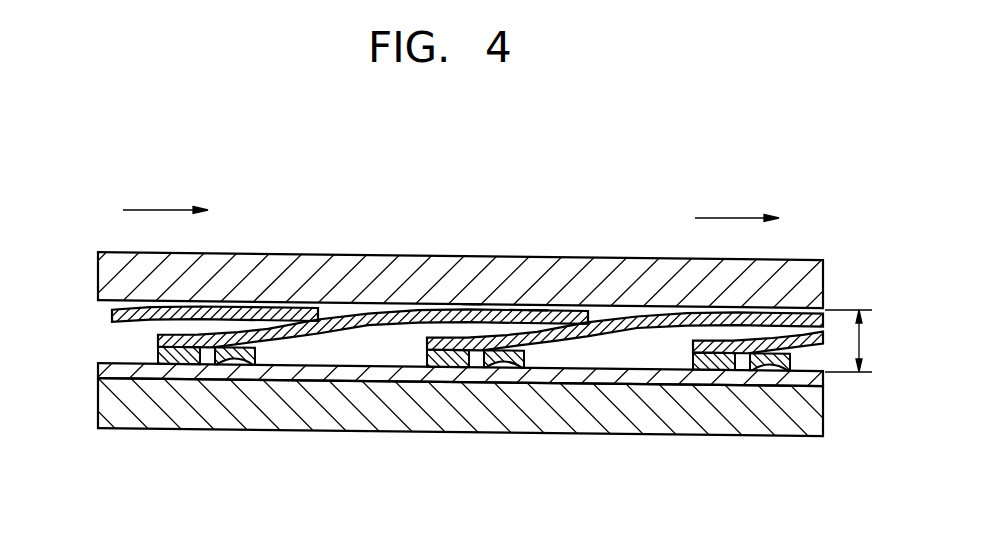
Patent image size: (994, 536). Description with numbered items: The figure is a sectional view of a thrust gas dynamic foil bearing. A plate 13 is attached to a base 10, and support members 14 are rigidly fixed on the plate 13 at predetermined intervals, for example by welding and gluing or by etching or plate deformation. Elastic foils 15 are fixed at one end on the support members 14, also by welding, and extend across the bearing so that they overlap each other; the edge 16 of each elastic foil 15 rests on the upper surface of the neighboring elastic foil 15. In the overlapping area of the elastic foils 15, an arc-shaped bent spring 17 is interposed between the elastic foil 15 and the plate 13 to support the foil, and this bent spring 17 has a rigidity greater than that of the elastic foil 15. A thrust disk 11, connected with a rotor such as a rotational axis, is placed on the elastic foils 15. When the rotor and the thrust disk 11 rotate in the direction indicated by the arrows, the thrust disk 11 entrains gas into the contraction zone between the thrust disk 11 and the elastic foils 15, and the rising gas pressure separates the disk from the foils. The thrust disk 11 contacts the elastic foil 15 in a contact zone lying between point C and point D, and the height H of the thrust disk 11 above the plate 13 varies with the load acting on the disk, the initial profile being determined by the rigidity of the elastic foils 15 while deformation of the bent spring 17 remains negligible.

The base 10 is at (578, 415).
The thrust disk 11 is at (270, 268).
The plate 13 is at (362, 373).
The support member 14 is at (172, 363).
The elastic foil 15 is at (301, 335).
The edge of elastic foil 16 is at (320, 310).
The arc-shaped bent spring 17 is at (231, 363).
The point C is at (472, 307).
The point D is at (538, 306).
The height of thrust disk H is at (848, 341).